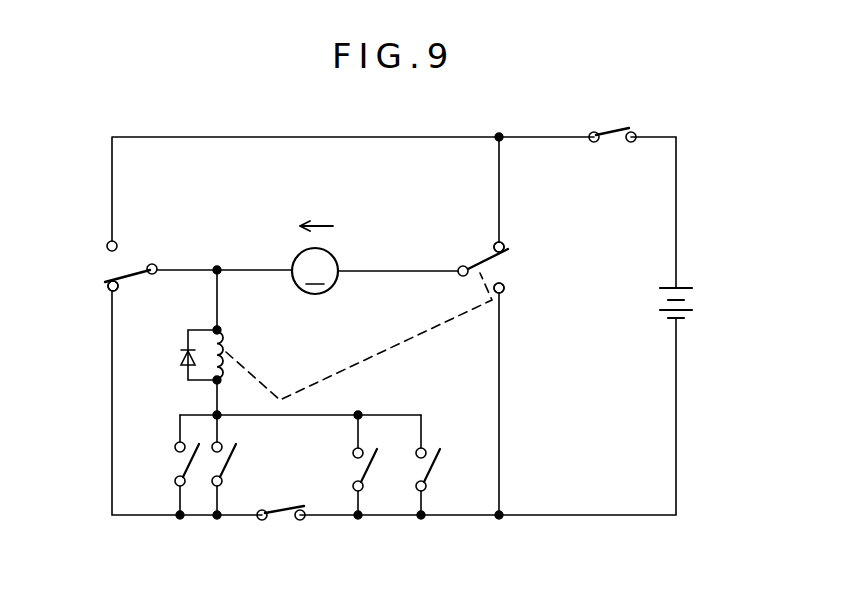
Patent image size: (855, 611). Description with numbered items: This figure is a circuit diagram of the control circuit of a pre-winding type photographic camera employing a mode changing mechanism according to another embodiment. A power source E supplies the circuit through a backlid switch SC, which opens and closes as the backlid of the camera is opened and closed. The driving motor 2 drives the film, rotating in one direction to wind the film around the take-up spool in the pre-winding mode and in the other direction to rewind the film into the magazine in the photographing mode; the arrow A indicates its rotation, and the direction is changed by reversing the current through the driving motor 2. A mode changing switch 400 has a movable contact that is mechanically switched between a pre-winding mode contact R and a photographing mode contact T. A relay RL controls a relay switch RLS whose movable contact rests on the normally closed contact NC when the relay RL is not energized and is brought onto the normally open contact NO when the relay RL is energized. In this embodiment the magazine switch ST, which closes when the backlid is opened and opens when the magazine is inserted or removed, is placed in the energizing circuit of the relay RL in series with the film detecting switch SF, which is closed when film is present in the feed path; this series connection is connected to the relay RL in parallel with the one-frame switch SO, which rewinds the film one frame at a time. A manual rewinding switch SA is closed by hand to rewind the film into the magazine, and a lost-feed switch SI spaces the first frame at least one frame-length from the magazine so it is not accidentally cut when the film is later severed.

The mode changing switch 400 is at (100, 274).
The driving motor 2 is at (315, 271).
The photographing mode contact T is at (101, 244).
The pre-winding mode contact R is at (101, 299).
The direction of motor rotation A is at (326, 229).
The relay switch RLS is at (392, 321).
The normally closed contact NC is at (515, 238).
The normally open contact NO is at (516, 298).
The backlid switch SC is at (612, 124).
The power source E is at (687, 303).
The relay RL is at (184, 342).
The magazine switch ST is at (171, 467).
The manual rewinding switch SA is at (236, 467).
The one-frame switch SO is at (378, 467).
The lost-feed switch SI is at (437, 467).
The film detecting switch SF is at (281, 528).